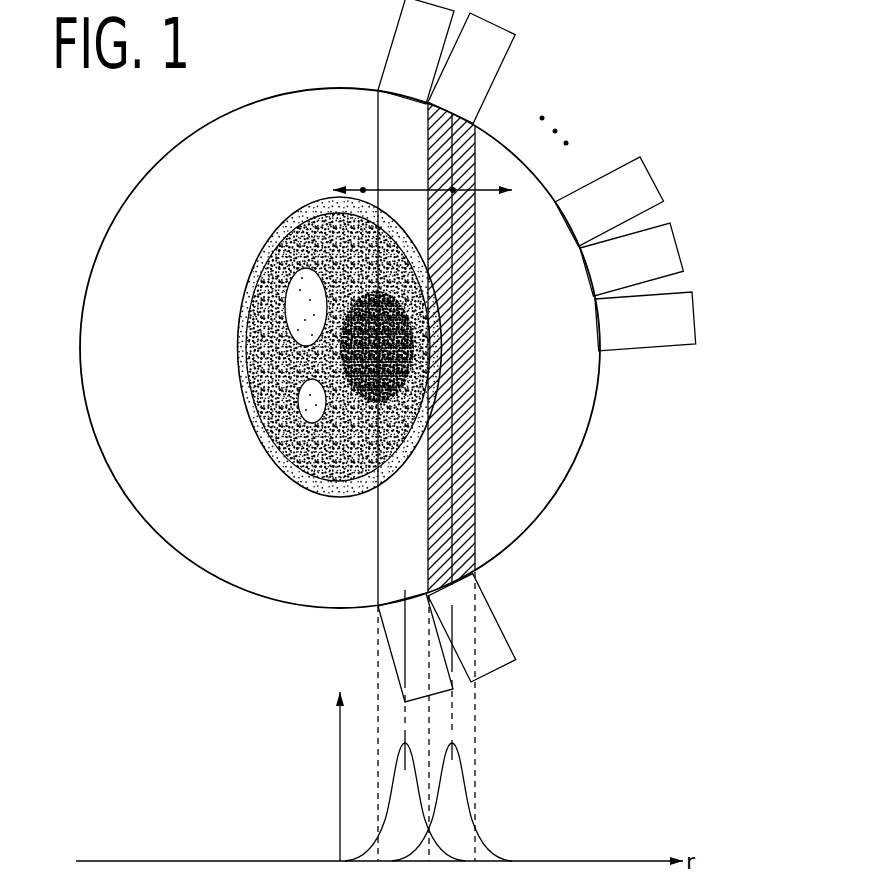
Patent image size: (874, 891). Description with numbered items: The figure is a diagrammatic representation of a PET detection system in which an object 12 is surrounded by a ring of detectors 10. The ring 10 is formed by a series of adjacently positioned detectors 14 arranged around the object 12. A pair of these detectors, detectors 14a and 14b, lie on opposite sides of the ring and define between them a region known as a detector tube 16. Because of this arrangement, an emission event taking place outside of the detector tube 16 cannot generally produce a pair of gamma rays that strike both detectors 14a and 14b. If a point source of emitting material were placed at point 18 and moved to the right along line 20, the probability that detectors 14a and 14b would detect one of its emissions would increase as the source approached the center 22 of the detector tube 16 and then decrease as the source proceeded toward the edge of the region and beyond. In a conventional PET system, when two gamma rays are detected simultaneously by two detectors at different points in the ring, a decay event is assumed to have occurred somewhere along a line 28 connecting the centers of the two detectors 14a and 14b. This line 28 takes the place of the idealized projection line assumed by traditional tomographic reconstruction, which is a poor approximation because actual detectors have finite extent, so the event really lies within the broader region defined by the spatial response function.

The ring of detectors 10 is at (660, 197).
The object 12 is at (238, 313).
The detectors 14 is at (410, 15).
The detector 14a is at (483, 41).
The detector 14b is at (490, 663).
The detector tube 16 is at (476, 473).
The point 18 is at (363, 188).
The line 20 is at (344, 185).
The center of the detector tube 22 is at (453, 191).
The line connecting the centers of the two detectors 28 is at (453, 511).